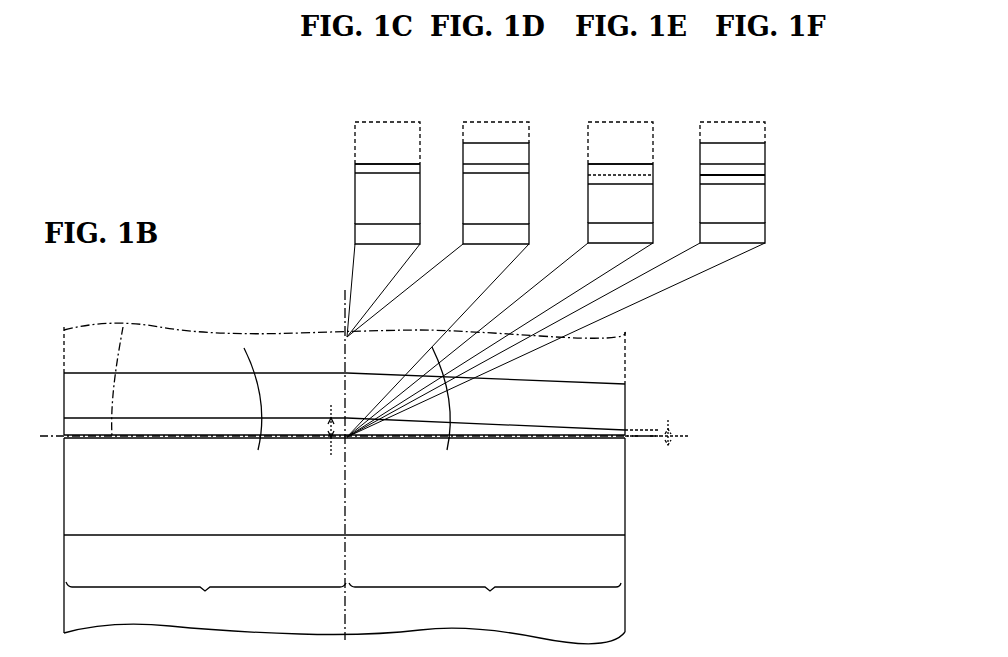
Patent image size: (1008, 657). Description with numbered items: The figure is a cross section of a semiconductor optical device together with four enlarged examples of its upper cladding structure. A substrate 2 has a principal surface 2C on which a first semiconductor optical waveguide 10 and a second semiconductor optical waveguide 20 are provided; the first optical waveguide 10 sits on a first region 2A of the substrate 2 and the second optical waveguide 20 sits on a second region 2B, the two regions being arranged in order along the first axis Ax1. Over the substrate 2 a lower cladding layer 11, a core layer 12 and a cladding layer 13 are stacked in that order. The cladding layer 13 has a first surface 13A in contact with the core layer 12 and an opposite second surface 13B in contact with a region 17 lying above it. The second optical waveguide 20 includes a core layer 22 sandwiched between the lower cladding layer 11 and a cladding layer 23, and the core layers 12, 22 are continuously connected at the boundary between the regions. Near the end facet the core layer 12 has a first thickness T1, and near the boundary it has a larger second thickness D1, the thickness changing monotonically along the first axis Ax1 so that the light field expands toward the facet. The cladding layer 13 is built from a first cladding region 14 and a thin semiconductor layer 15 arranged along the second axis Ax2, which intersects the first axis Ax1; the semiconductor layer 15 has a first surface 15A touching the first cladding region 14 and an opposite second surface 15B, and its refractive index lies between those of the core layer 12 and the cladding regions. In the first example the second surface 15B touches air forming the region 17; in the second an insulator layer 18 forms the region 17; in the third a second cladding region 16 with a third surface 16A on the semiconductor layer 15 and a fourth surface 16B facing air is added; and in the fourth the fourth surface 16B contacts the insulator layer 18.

In FIG. 1B, the substrate 2 is at (628, 604).
In FIG. 1B, the first region 2A is at (485, 599).
In FIG. 1B, the second region 2B is at (206, 599).
In FIG. 1B, the principal surface 2C is at (605, 538).
In FIG. 1B, the first semiconductor optical waveguide 10 is at (440, 452).
In FIG. 1B, the cladding layer 11 is at (628, 510).
In FIG. 1B, the core layer 12 is at (628, 442).
In FIG. 1C, the core layer 12 is at (364, 235).
In FIG. 1D, the core layer 12 is at (472, 236).
In FIG. 1E, the core layer 12 is at (600, 235).
In FIG. 1F, the core layer 12 is at (708, 236).
In FIG. 1B, the cladding layer 13 is at (626, 399).
In FIG. 1C, the cladding layer 13 is at (415, 95).
In FIG. 1D, the cladding layer 13 is at (534, 95).
In FIG. 1E, the cladding layer 13 is at (652, 95).
In FIG. 1F, the cladding layer 13 is at (763, 95).
In FIG. 1B, the first surface 13A is at (520, 428).
In FIG. 1B, the second surface 13B is at (500, 380).
In FIG. 1C, the first cladding region 14 is at (387, 178).
In FIG. 1D, the first cladding region 14 is at (495, 178).
In FIG. 1E, the first cladding region 14 is at (608, 190).
In FIG. 1F, the first cladding region 14 is at (720, 190).
In FIG. 1C, the semiconductor layer 15 is at (396, 172).
In FIG. 1D, the semiconductor layer 15 is at (505, 172).
In FIG. 1E, the semiconductor layer 15 is at (621, 168).
In FIG. 1F, the semiconductor layer 15 is at (729, 168).
In FIG. 1C, the first surface 15A is at (362, 176).
In FIG. 1C, the second surface 15B is at (366, 167).
In FIG. 1E, the second cladding region 16 is at (641, 170).
In FIG. 1F, the second cladding region 16 is at (751, 170).
In FIG. 1E, the third surface 16A is at (598, 178).
In FIG. 1E, the fourth surface 16B is at (596, 166).
In FIG. 1B, the region 17 is at (630, 352).
In FIG. 1C, the region 17 is at (356, 132).
In FIG. 1D, the region 17 is at (463, 128).
In FIG. 1E, the region 17 is at (588, 130).
In FIG. 1F, the region 17 is at (700, 130).
In FIG. 1D, the insulator layer 18 is at (470, 153).
In FIG. 1F, the insulator layer 18 is at (706, 153).
In FIG. 1B, the second semiconductor optical waveguide 20 is at (250, 448).
In FIG. 1B, the core layer 22 is at (205, 410).
In FIG. 1B, the cladding layer 23 is at (160, 392).
In FIG. 1B, the first axis Ax1 is at (119, 369).
In FIG. 1B, the second axis Ax2 is at (345, 337).
In FIG. 1B, the second thickness D1 is at (327, 430).
In FIG. 1B, the first thickness T1 is at (662, 433).